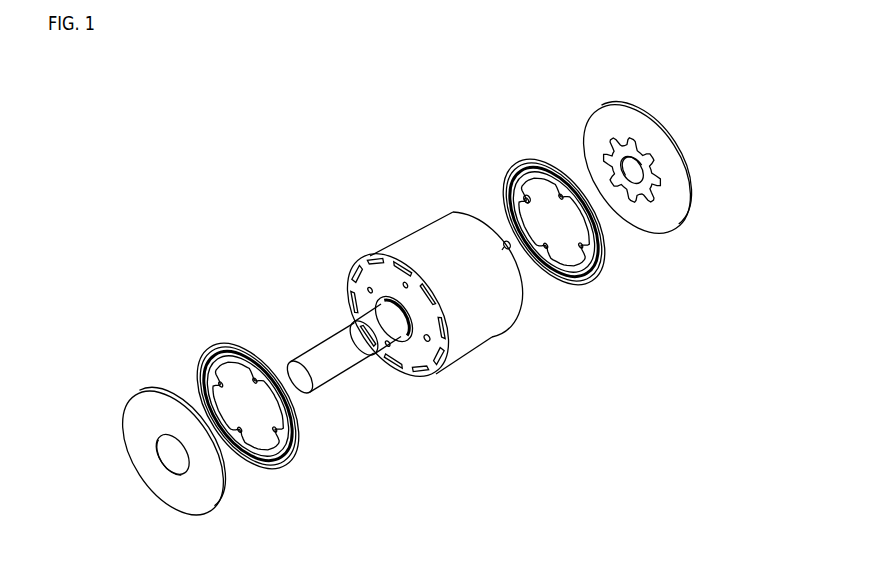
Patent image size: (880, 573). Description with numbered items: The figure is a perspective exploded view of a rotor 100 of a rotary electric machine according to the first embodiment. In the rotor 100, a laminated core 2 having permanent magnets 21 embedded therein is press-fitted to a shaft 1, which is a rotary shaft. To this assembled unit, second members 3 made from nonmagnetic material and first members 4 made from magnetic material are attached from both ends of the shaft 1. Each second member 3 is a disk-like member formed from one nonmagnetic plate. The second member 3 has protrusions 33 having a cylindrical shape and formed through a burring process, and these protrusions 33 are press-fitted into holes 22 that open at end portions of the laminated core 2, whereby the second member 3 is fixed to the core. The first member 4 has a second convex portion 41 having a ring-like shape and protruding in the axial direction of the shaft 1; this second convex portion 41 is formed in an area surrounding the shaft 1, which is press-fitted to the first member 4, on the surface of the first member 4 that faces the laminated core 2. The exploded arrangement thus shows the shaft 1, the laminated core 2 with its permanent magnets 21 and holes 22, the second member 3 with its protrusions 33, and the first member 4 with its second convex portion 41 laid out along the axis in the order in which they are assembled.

The rotor 100 is at (169, 168).
The shaft 1 is at (325, 347).
The laminated core 2 is at (427, 240).
The permanent magnets 21 is at (360, 272).
The holes 22 is at (428, 343).
The second member 3 is at (520, 165).
The protrusions 33 is at (517, 197).
The first member 4 is at (598, 120).
The second convex portion 41 is at (648, 190).